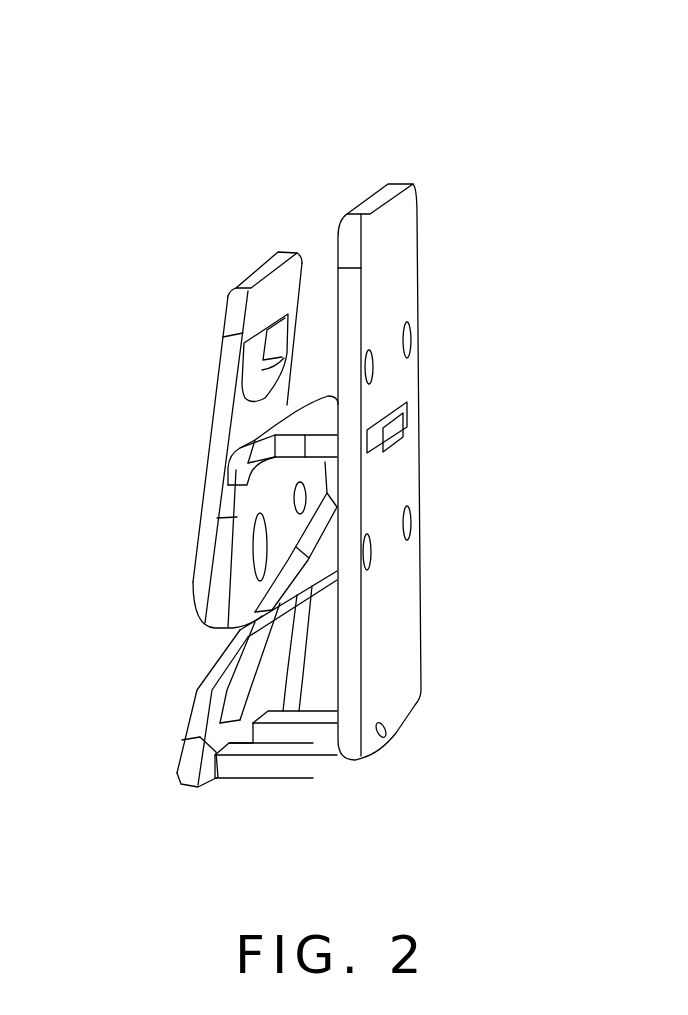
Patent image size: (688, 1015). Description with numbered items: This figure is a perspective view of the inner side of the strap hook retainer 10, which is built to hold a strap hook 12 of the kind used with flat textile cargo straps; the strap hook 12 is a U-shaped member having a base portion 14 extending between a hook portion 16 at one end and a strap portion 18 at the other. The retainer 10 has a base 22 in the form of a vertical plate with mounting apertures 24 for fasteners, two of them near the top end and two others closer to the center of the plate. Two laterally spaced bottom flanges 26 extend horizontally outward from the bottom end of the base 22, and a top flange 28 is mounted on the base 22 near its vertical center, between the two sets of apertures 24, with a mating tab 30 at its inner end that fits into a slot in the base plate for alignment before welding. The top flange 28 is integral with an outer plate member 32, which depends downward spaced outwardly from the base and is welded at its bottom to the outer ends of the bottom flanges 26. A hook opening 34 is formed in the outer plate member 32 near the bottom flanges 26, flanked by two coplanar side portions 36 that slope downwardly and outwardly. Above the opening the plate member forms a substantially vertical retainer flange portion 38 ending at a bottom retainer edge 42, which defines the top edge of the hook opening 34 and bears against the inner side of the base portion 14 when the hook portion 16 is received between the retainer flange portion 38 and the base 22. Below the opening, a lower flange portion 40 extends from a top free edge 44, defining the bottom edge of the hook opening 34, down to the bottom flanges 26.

The strap hook retainer 10 is at (395, 154).
The strap hook 12 is at (251, 253).
The base portion 14 is at (202, 613).
The hook portion 16 is at (320, 550).
The strap portion 18 is at (218, 442).
The base 22 is at (397, 623).
The mounting apertures 24 is at (380, 337).
The bottom flanges 26 is at (302, 720).
The top flange 28 is at (317, 423).
The mating tab 30 is at (400, 415).
The outer plate member 32 is at (188, 800).
The hook opening 34 is at (247, 660).
The side portions 36 is at (242, 692).
The retainer flange portion 38 is at (267, 496).
The lower flange portion 40 is at (240, 725).
The bottom retainer edge 42 is at (252, 611).
The top free edge 44 is at (286, 680).